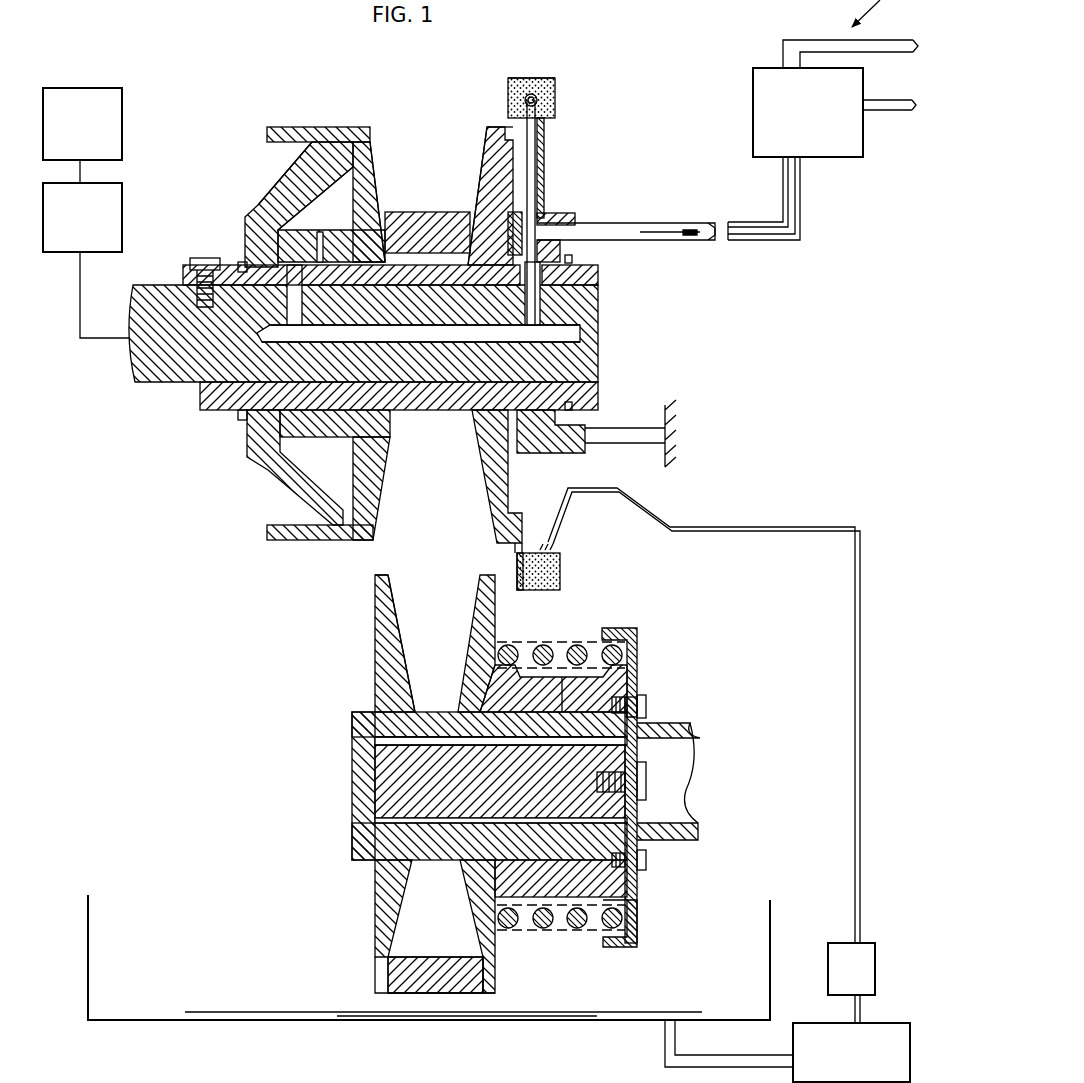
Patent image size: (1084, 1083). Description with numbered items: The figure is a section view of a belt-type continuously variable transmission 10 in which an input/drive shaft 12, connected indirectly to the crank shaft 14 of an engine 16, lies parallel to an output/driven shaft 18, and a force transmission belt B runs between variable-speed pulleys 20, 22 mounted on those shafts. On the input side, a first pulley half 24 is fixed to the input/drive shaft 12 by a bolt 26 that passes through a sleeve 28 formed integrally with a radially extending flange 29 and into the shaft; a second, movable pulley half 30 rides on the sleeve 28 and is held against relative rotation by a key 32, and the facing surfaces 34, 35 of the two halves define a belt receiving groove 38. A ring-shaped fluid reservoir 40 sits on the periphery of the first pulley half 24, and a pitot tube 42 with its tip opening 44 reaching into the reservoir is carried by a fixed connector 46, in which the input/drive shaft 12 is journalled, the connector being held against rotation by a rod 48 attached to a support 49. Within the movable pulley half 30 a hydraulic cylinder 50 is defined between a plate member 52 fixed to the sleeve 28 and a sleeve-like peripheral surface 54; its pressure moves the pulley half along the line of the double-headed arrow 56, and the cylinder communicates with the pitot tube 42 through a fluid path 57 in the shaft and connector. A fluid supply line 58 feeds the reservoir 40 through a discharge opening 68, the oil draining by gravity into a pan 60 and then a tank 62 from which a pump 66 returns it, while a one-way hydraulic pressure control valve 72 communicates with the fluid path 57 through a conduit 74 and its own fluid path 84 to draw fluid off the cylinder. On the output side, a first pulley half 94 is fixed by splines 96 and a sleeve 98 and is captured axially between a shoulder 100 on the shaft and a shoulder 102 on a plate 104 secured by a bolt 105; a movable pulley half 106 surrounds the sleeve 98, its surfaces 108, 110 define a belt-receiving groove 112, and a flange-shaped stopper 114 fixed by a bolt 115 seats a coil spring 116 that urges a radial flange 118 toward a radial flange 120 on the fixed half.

The belt-type continuously variable transmission 10 is at (850, 332).
The input/drive shaft 12 is at (600, 310).
The crank shaft 14 is at (86, 260).
The engine 16 is at (82, 135).
The output/driven shaft 18 is at (358, 790).
The variable-speed pulley 20 is at (592, 148).
The variable-speed pulley 22 is at (365, 916).
The first pulley half 24 is at (500, 127).
The bolt 26 is at (200, 258).
The sleeve 28 is at (425, 400).
The radially extending flange 29 is at (488, 160).
The movable pulley half 30 is at (377, 142).
The key 32 is at (247, 440).
The facing surface 34 is at (478, 180).
The facing surface 35 is at (383, 180).
The belt receiving groove 38 is at (437, 495).
The fluid reservoir 40 is at (535, 78).
The pitot tube 42 is at (546, 192).
The tip opening 44 is at (548, 102).
The fixed connector 46 is at (565, 223).
The rod 48 is at (627, 427).
The support 49 is at (701, 433).
The hydraulic cylinder 50 is at (300, 178).
The plate member 52 is at (265, 210).
The sleeve-like peripheral surface 54 is at (312, 133).
The double-headed arrow 56 is at (305, 567).
The fluid path 57 is at (287, 335).
The fluid supply line 58 is at (862, 640).
The pan 60 is at (383, 1027).
The tank 62 is at (851, 1052).
The pump 66 is at (851, 969).
The discharge opening 68 is at (560, 550).
The one-way hydraulic pressure control valve 72 is at (835, 78).
The conduit 74 is at (710, 240).
The fluid path 84 is at (668, 242).
The first pulley half 94 is at (383, 660).
The splines 96 is at (358, 745).
The sleeve 98 is at (583, 723).
The shoulder 100 is at (380, 870).
The shoulder 102 is at (617, 758).
The plate 104 is at (635, 813).
The bolt 105 is at (646, 781).
The movable pulley half 106 is at (487, 638).
The facing surface 108 is at (397, 618).
The facing surface 110 is at (465, 642).
The belt-receiving groove 112 is at (427, 928).
The flange-shaped stopper 114 is at (640, 893).
The bolt 115 is at (646, 858).
The coil spring 116 is at (580, 640).
The radial flange 118 is at (490, 975).
The radial flange 120 is at (383, 630).
The force transmission belt B is at (418, 212).